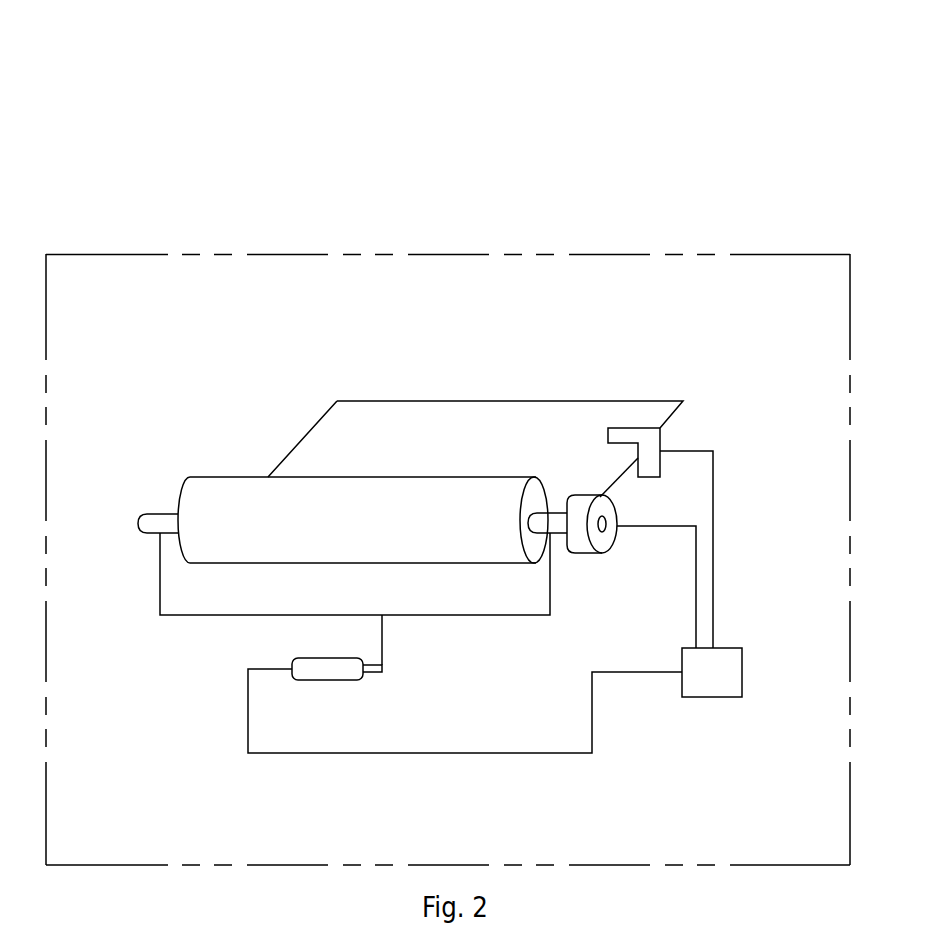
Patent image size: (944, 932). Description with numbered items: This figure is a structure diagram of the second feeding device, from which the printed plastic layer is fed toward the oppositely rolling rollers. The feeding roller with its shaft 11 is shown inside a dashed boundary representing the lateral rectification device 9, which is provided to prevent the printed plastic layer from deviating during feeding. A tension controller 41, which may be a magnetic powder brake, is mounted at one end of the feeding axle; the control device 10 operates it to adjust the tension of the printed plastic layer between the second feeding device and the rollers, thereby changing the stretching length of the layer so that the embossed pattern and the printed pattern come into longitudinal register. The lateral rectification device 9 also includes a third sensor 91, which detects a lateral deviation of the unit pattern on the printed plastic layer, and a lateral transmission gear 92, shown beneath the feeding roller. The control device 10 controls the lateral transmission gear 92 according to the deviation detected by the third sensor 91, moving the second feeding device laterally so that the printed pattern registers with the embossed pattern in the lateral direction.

The lateral rectification device 9 is at (273, 300).
The control device 10 is at (708, 685).
The roller shaft 11 is at (153, 520).
The tension controller 41 is at (582, 543).
The third sensor 91 is at (653, 445).
The lateral transmission gear 92 is at (322, 668).